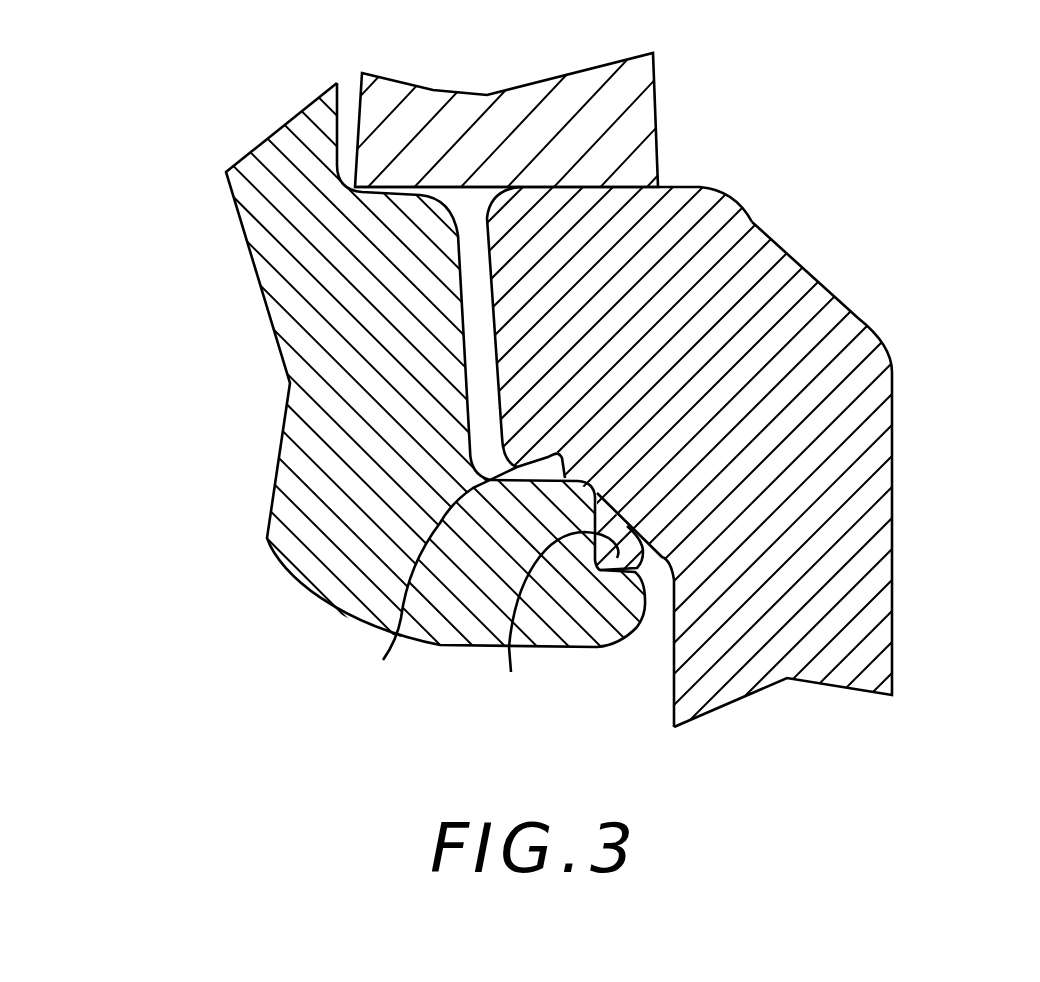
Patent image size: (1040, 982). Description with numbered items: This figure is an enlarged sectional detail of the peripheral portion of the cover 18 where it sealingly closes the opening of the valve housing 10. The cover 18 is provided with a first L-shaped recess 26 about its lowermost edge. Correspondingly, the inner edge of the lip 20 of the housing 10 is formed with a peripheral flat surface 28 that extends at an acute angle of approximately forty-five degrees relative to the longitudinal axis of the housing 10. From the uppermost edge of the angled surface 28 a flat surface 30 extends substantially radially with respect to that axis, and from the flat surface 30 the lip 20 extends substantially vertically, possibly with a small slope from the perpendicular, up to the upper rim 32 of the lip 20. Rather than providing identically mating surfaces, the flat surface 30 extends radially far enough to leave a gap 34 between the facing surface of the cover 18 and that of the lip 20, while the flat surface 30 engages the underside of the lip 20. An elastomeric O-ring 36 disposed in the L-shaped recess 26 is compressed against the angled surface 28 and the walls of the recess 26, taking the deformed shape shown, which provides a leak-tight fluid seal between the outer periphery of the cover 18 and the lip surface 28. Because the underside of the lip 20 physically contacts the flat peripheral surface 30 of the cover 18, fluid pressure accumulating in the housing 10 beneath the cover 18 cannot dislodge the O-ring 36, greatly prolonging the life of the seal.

The valve housing 10 is at (892, 488).
The cover 18 is at (263, 291).
The lip 20 is at (477, 247).
The L-shaped recess 26 is at (554, 628).
The flat angled surface 28 is at (659, 556).
The flat surface 30 is at (460, 585).
The upper rim 32 is at (680, 186).
The gap 34 is at (478, 355).
The O-ring 36 is at (617, 555).